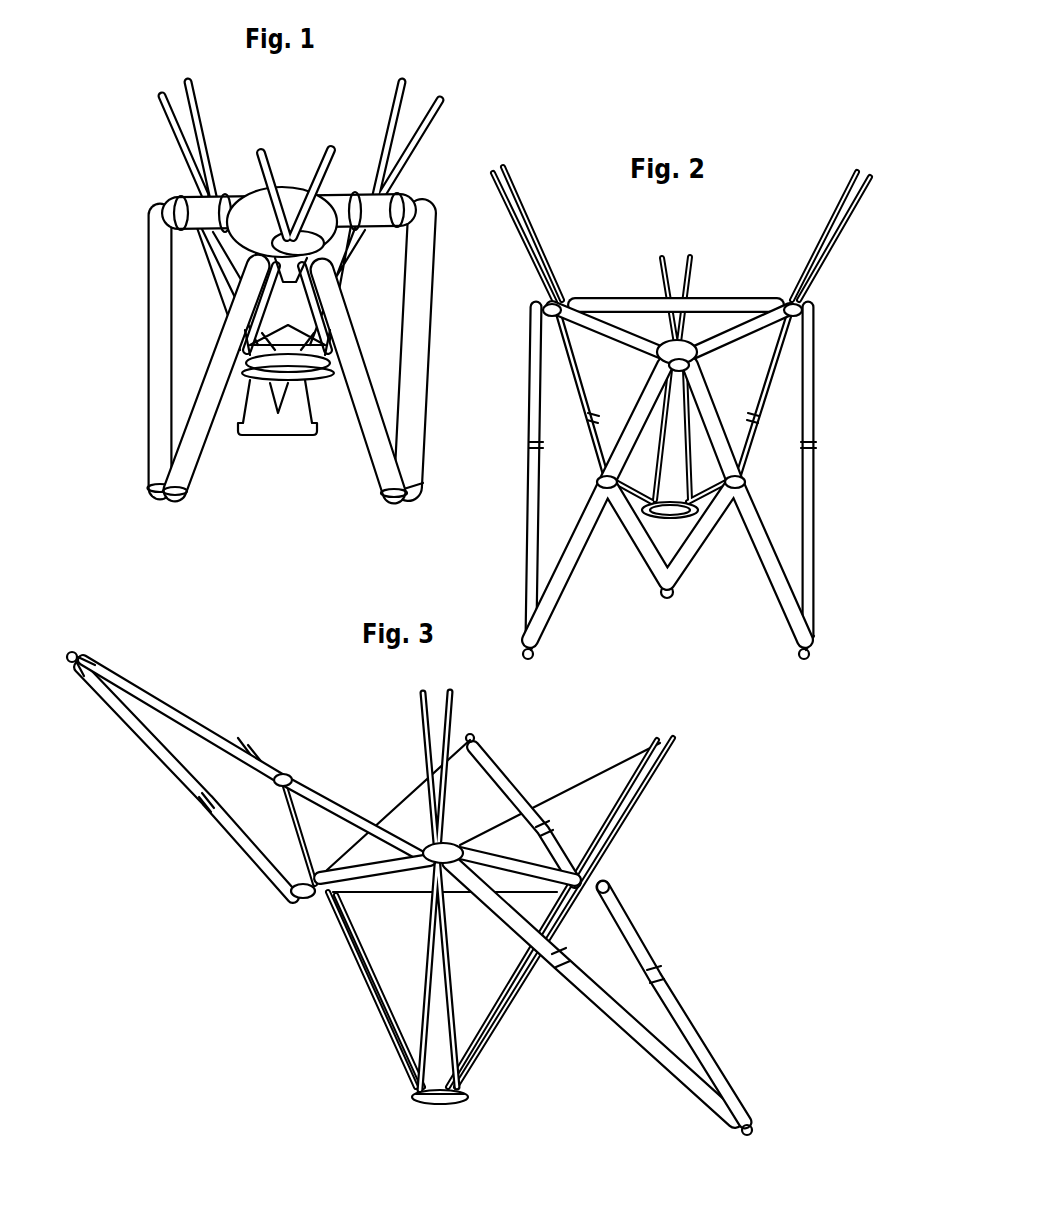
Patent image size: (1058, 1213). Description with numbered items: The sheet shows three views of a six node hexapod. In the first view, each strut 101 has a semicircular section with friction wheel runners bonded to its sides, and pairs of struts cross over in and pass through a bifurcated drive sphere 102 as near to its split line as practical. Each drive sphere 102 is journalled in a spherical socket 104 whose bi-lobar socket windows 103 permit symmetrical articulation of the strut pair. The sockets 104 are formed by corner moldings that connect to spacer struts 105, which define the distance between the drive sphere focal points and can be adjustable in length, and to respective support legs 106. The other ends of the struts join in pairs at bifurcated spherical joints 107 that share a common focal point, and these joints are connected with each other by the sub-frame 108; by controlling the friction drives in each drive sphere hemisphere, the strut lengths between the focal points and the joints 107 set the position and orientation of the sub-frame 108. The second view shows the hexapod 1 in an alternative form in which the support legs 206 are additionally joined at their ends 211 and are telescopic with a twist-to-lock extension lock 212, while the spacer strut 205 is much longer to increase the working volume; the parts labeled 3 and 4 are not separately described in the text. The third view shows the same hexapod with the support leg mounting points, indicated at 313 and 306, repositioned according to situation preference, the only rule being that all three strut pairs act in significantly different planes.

In FIG. 1, the strut 101 is at (240, 207).
In FIG. 1, the bifurcated drive sphere 102 is at (280, 247).
In FIG. 1, the bi-lobar socket window 103 is at (253, 267).
In FIG. 1, the spherical socket 104 is at (262, 265).
In FIG. 1, the spacer strut 105 is at (243, 220).
In FIG. 1, the support leg 106 is at (159, 327).
In FIG. 1, the bifurcated spherical joint 107 is at (253, 357).
In FIG. 1, the sub-frame 108 is at (267, 368).
In FIG. 2, the folding frame 1 is at (808, 657).
In FIG. 2, the tension rod 3 is at (753, 383).
In FIG. 2, the top cross bar 4 is at (818, 318).
In FIG. 2, the spacer strut 205 is at (753, 322).
In FIG. 2, the support leg 206 is at (818, 553).
In FIG. 2, the end of support leg 211 is at (722, 665).
In FIG. 2, the twist-to-lock extension lock 212 is at (815, 450).
In FIG. 3, the sleeve coupling 306 is at (653, 973).
In FIG. 3, the hinge joint 313 is at (603, 887).